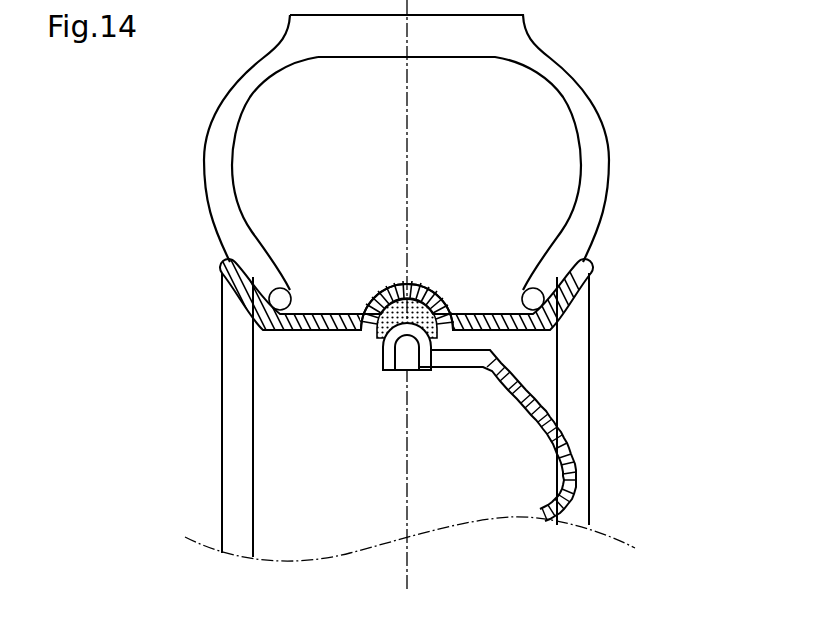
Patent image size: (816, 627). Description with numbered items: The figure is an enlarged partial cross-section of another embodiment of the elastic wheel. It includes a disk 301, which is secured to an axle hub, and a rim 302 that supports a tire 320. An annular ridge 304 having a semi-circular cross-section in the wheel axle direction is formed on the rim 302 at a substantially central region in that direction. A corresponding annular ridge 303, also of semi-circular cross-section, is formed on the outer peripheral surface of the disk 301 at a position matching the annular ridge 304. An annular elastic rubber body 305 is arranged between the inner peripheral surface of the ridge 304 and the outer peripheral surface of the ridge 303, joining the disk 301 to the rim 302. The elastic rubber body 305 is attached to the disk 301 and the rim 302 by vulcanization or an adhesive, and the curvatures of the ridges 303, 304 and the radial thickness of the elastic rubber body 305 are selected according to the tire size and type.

The disk 301 is at (578, 470).
The rim 302 is at (592, 260).
The annular ridge 303 is at (410, 342).
The annular ridge 304 is at (424, 282).
The annular elastic rubber body 305 is at (377, 333).
The tire 320 is at (583, 92).